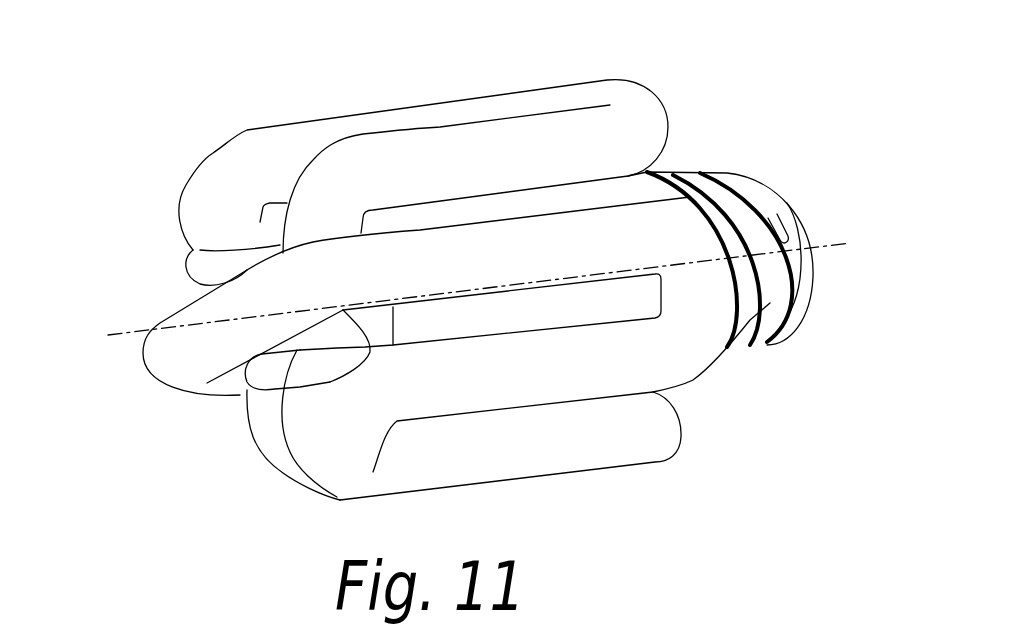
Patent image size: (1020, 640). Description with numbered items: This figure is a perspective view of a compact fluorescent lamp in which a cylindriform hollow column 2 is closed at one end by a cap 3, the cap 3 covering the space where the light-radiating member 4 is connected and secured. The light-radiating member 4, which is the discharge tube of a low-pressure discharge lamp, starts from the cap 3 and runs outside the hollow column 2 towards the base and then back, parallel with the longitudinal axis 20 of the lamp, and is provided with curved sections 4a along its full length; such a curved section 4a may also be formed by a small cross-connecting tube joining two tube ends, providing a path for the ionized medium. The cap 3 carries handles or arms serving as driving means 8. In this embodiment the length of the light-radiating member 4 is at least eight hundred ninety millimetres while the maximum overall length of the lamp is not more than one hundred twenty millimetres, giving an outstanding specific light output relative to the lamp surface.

The hollow column 2 is at (462, 322).
The cap 3 is at (372, 325).
The light-radiating member 4 is at (423, 165).
The curved section 4a is at (697, 300).
The driving means 8 is at (257, 377).
The longitudinal axis 20 is at (833, 241).